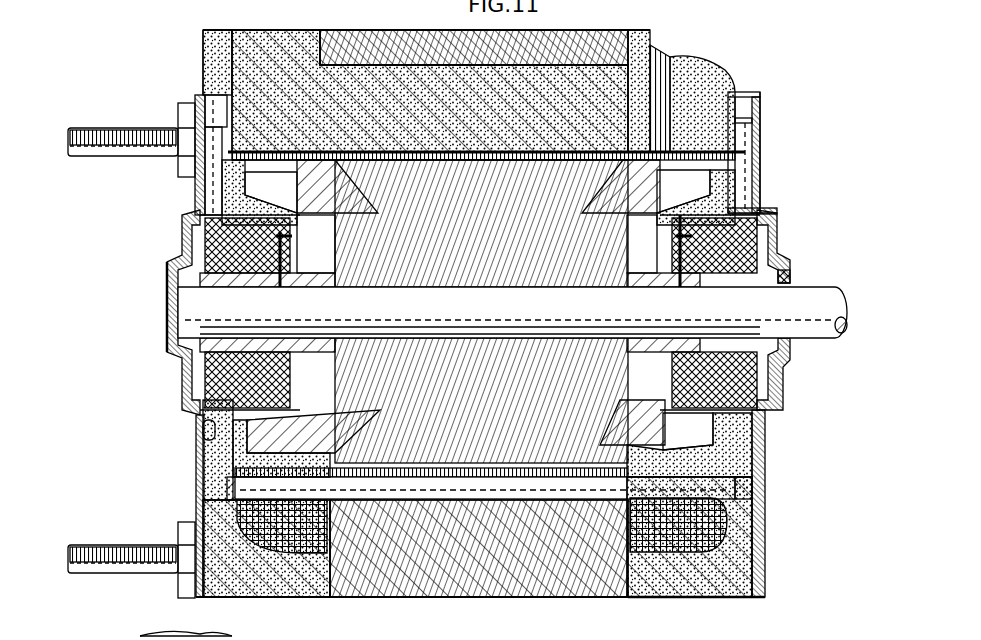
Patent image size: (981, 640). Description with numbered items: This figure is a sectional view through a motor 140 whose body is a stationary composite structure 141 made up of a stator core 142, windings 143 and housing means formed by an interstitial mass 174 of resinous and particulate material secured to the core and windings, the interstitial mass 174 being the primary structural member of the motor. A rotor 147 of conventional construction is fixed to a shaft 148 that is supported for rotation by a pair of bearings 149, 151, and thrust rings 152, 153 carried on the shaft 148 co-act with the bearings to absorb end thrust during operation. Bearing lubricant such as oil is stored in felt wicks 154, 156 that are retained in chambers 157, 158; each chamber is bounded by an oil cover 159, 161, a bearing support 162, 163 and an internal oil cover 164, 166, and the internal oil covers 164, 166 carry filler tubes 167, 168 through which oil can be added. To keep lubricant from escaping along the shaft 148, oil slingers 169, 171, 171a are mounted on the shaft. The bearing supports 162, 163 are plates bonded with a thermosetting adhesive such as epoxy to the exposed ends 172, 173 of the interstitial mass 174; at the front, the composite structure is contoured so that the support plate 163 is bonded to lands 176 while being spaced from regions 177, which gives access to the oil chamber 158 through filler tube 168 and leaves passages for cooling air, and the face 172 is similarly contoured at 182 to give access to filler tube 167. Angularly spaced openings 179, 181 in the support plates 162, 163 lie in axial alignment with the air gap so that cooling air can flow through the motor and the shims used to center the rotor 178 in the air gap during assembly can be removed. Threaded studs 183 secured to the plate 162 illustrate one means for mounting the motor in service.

The motor 140 is at (655, 33).
The stationary composite structure 141 is at (315, 590).
The stator core 142 is at (440, 50).
The windings 143 is at (760, 519).
The rotor 147 is at (735, 192).
The shaft 148 is at (830, 300).
The bearing 149 is at (190, 282).
The bearing 151 is at (778, 256).
The thrust ring 152 is at (275, 287).
The thrust ring 153 is at (678, 286).
The felt wick 154 is at (205, 243).
The felt wick 156 is at (760, 211).
The chamber 157 is at (205, 378).
The chamber 158 is at (770, 400).
The oil cover 159 is at (168, 316).
The oil cover 161 is at (772, 373).
The bearing support 162 is at (203, 93).
The bearing support 163 is at (762, 108).
The internal oil cover 164 is at (760, 456).
The internal oil cover 166 is at (203, 455).
The filler tube 167 is at (220, 172).
The filler tube 168 is at (749, 158).
The oil slinger 169 is at (283, 278).
The oil slinger 171 is at (686, 366).
The oil slinger 171a is at (792, 278).
The exposed end 172 is at (197, 510).
The exposed end 173 is at (765, 560).
The interstitial mass 174 is at (662, 603).
The lands 176 is at (748, 592).
The regions 177 is at (660, 95).
The rotor 178 is at (680, 180).
The openings 179 is at (197, 457).
The openings 181 is at (765, 470).
The contour 182 is at (233, 42).
The threaded studs 183 is at (126, 128).